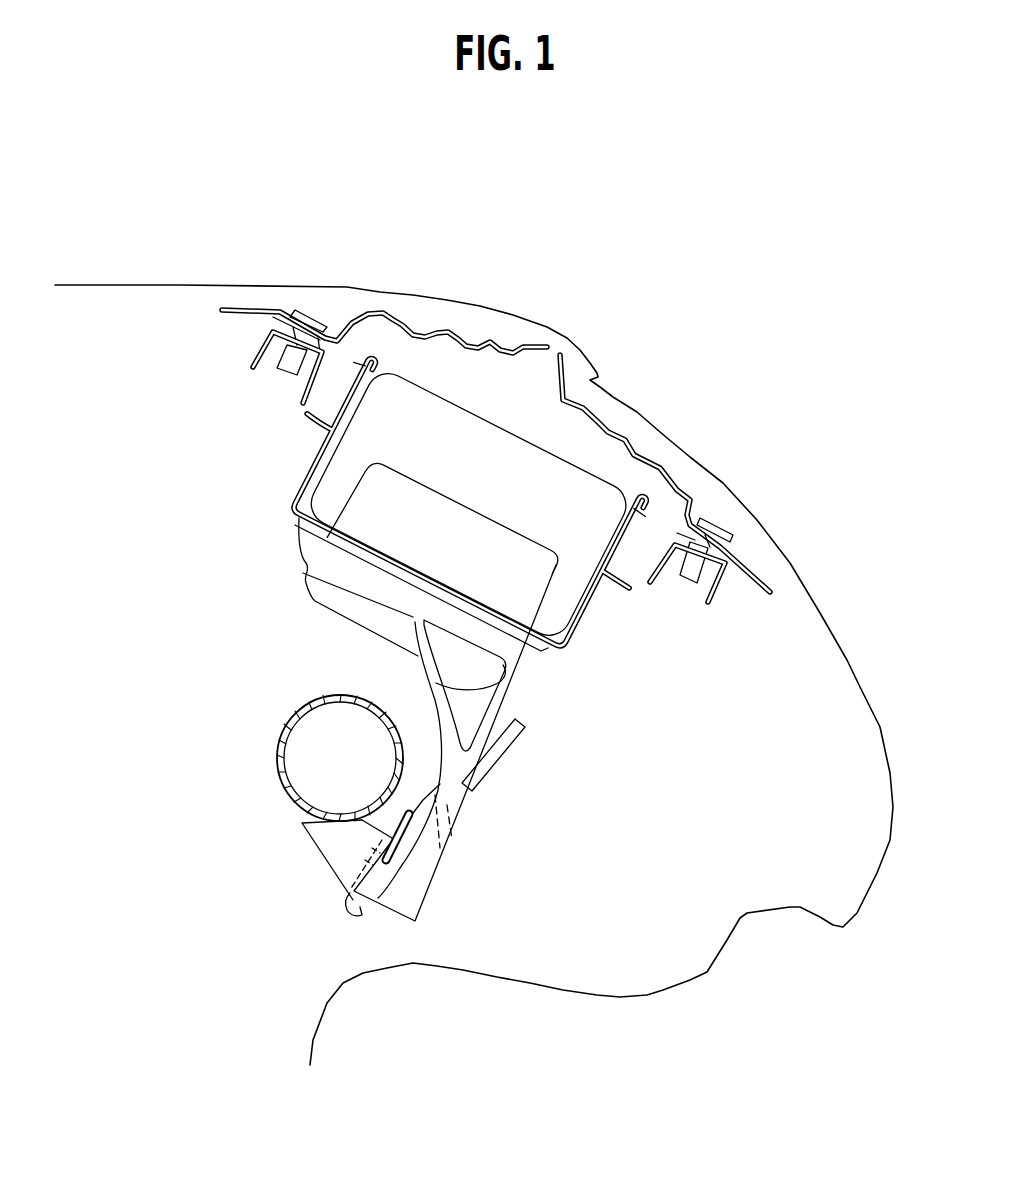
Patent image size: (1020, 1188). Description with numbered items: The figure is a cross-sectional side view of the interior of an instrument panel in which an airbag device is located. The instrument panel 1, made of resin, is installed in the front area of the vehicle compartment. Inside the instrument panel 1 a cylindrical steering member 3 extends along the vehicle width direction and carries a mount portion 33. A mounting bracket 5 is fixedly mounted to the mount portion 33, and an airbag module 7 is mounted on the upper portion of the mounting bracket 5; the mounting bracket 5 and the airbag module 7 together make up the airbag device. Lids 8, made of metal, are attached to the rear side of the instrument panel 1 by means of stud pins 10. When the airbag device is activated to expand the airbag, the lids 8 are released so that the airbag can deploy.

The instrument panel 1 is at (217, 280).
The steering member 3 is at (280, 740).
The mounting bracket 5 is at (528, 676).
The airbag module 7 is at (477, 407).
The lids 8 is at (592, 400).
The stud pins 10 is at (710, 533).
The mount portion 33 is at (333, 852).